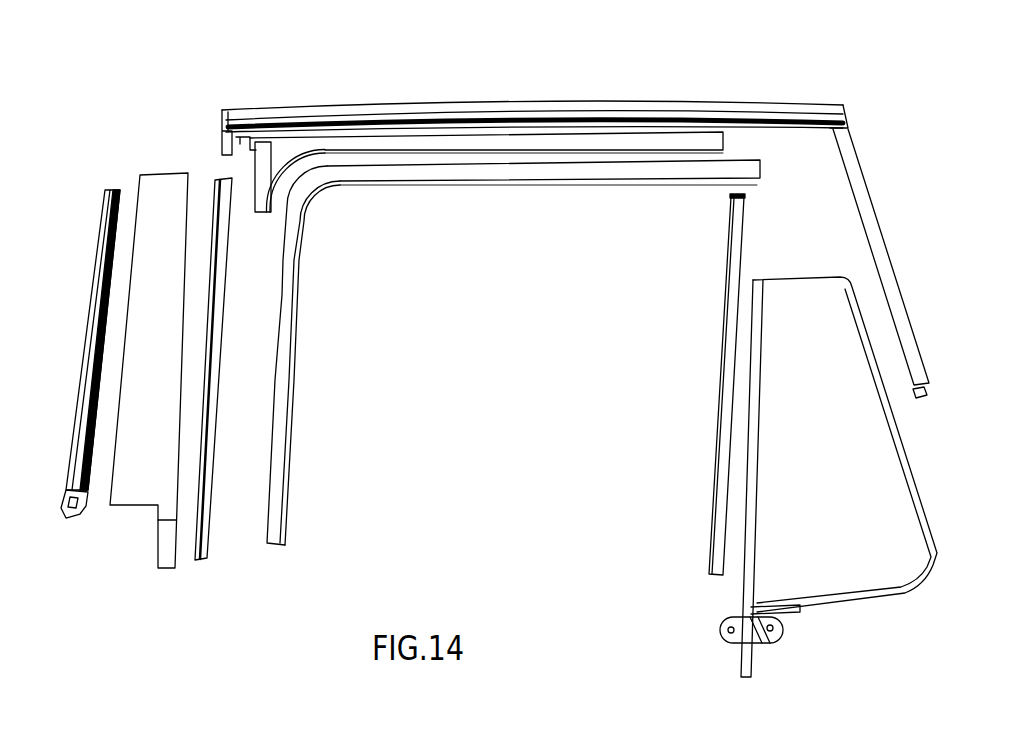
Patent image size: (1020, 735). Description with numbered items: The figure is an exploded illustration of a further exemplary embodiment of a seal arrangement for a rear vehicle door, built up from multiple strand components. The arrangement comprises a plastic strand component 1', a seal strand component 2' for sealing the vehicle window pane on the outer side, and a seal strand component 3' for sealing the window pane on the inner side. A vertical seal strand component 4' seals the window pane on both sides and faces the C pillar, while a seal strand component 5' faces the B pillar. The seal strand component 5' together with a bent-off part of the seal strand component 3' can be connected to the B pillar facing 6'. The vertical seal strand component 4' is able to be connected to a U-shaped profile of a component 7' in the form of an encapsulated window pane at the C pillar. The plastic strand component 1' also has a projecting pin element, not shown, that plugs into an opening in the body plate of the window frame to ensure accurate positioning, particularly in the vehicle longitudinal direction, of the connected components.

The plastic strand component 1' is at (479, 139).
The seal strand component 2' is at (575, 230).
The seal strand component 3' is at (513, 352).
The vertical seal strand component 4' is at (703, 384).
The seal strand component 5' is at (230, 387).
The B pillar facing 6' is at (149, 370).
The encapsulated window pane component 7' is at (828, 477).